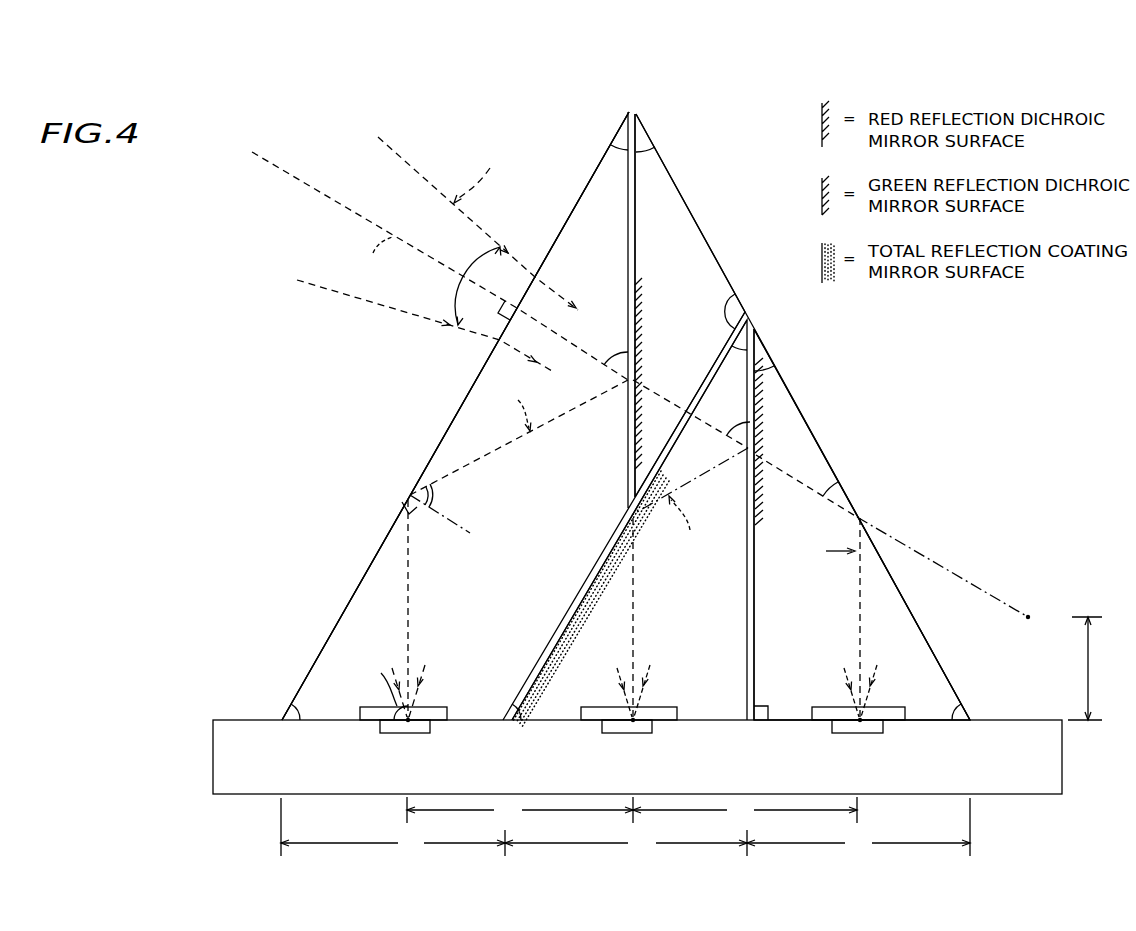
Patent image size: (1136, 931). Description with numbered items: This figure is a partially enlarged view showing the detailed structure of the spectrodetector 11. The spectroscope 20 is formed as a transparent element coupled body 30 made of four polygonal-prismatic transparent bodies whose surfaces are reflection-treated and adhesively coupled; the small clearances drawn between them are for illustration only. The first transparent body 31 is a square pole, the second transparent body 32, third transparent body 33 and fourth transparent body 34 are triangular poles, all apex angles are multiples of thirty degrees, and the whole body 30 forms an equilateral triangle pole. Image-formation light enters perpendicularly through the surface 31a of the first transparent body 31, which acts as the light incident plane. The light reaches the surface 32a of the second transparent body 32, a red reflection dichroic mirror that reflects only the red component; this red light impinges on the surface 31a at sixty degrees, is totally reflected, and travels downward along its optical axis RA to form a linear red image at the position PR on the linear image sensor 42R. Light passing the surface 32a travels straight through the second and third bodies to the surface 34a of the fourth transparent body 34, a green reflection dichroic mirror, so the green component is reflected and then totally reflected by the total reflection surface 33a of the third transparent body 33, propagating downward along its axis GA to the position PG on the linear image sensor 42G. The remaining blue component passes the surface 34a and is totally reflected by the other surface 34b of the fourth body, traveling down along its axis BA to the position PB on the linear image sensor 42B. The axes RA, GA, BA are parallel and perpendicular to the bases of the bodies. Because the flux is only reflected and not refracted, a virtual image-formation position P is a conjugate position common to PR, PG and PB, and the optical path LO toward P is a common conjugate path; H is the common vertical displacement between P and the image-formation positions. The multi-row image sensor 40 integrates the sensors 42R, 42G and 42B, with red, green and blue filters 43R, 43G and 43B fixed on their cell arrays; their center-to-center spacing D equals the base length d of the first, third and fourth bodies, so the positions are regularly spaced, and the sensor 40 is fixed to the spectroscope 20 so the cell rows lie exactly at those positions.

The spectrodetector 11 is at (226, 322).
The spectroscope 20 is at (586, 416).
The transparent element coupled body 30 is at (586, 416).
The first transparent body 31 is at (520, 576).
The surface of the first transparent body 31a is at (477, 378).
The second transparent body 32 is at (690, 263).
The surface of the second transparent body 32a is at (628, 418).
The third transparent body 33 is at (703, 584).
The surface of the third transparent body 33a is at (626, 519).
The fourth transparent body 34 is at (815, 604).
The surface of the fourth transparent body 34a is at (751, 485).
The another surface of the fourth transparent body 34b is at (853, 499).
The multi-row image sensor 40 is at (588, 757).
The linear image sensor 42R is at (423, 732).
The linear image sensor 42G is at (647, 733).
The linear image sensor 42B is at (874, 733).
The red filter 43R is at (372, 722).
The green filter 43G is at (598, 718).
The blue filter 43B is at (822, 718).
The image formation position PR is at (412, 731).
The image formation position PG is at (637, 731).
The image formation position PB is at (861, 731).
The optical axis of the red light component RA is at (410, 630).
The optical axis of the green light component GA is at (634, 648).
The optical axis of the blue light component BA is at (861, 648).
The optical path LO is at (930, 558).
The virtual image-formation position P is at (1030, 620).
The amount of common vertical displacement H is at (1085, 668).
The center-to-center spacing D is at (632, 810).
The base length d is at (625, 827).